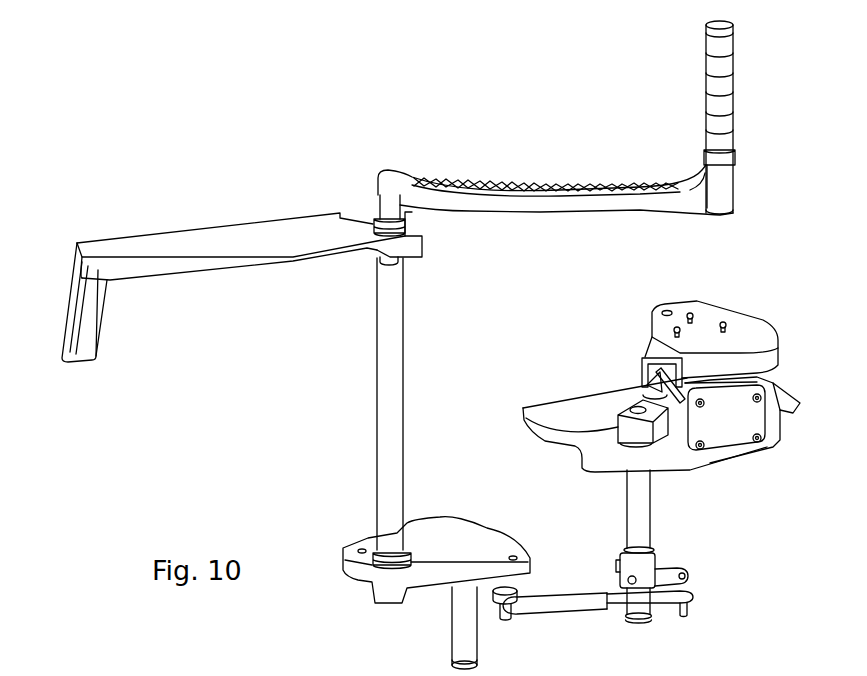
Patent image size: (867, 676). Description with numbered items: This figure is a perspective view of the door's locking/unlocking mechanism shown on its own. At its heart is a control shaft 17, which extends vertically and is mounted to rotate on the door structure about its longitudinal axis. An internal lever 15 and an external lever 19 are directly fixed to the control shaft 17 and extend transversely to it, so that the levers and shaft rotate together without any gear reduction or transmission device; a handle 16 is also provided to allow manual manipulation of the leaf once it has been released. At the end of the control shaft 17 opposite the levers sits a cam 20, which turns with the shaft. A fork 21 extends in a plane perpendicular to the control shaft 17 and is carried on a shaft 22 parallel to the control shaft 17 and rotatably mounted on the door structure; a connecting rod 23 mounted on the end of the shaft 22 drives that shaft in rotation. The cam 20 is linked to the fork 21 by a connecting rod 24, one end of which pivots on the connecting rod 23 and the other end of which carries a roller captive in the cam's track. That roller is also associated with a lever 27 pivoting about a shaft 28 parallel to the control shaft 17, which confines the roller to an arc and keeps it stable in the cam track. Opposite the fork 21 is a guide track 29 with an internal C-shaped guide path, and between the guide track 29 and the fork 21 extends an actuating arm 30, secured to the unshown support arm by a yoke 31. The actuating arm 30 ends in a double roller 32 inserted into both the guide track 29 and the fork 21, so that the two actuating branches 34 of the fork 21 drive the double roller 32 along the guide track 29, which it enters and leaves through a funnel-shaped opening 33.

The internal lever 15 is at (493, 185).
The handle 16 is at (717, 83).
The control shaft 17 is at (403, 382).
The external lever 19 is at (287, 230).
The cam 20 is at (453, 530).
The fork 21 is at (540, 408).
The shaft 22 is at (638, 518).
The connecting rod 23 is at (667, 573).
The connecting rod 24 is at (563, 603).
The lever 27 is at (487, 593).
The shaft 28 is at (457, 648).
The guide track 29 is at (715, 313).
The actuating arm 30 is at (715, 453).
The yoke 31 is at (733, 437).
The double roller 32 is at (647, 386).
The opening 33 is at (643, 370).
The actuating branches 34 is at (650, 390).